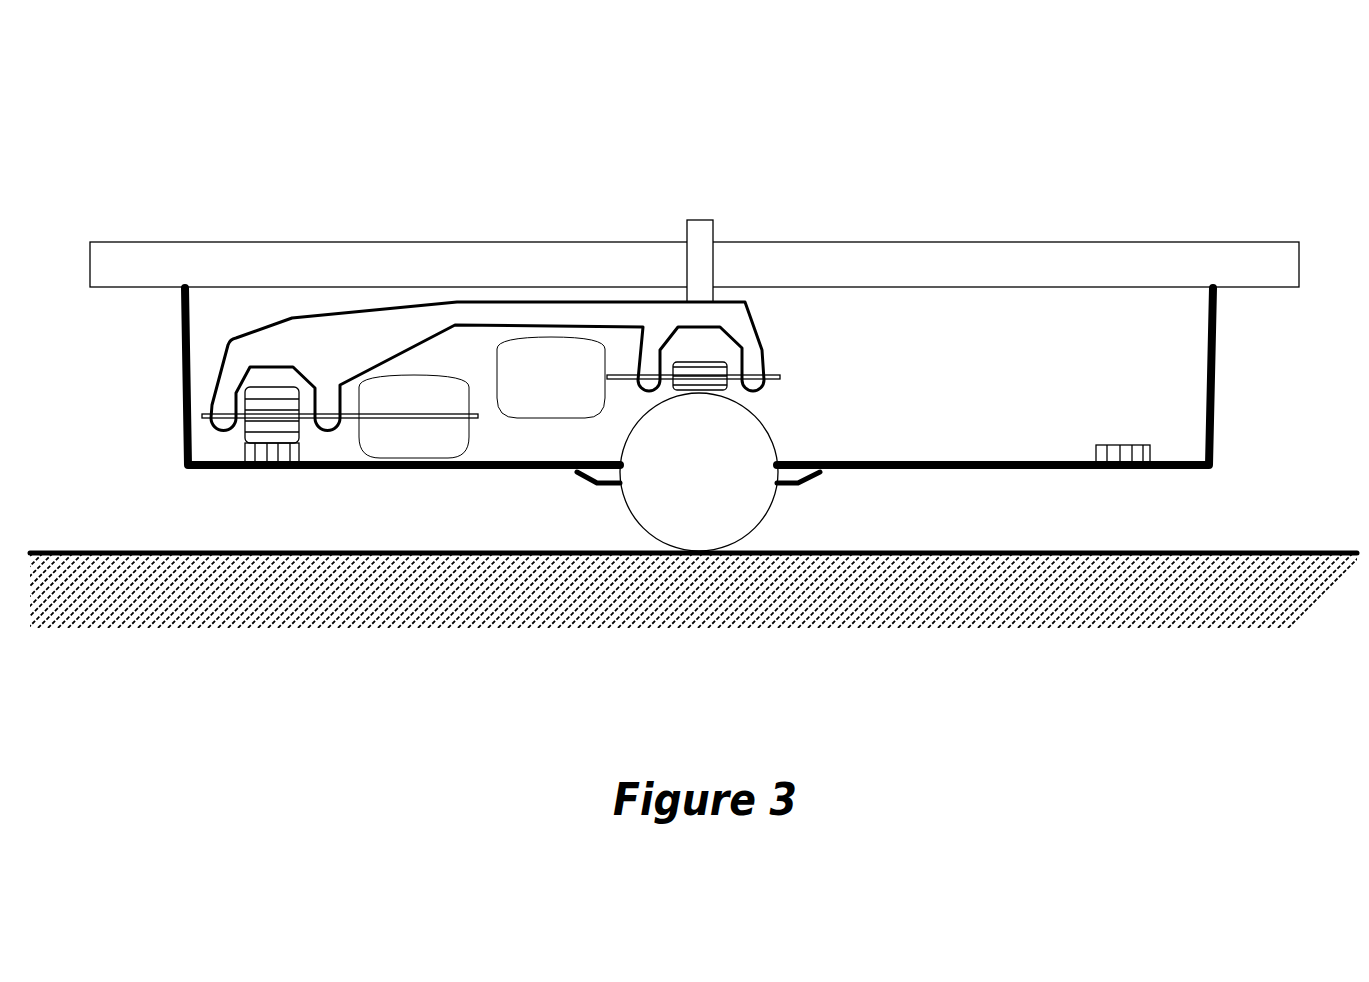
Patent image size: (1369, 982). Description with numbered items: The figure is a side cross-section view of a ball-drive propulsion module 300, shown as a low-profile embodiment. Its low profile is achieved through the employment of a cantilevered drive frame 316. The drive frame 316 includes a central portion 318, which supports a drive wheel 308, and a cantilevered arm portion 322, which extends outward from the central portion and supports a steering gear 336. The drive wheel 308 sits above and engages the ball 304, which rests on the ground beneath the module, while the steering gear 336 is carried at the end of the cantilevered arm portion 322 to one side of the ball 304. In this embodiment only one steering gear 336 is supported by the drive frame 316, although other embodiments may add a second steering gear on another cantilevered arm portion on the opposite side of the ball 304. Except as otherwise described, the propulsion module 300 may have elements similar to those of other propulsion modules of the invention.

The propulsion module 300 is at (373, 142).
The ball 304 is at (782, 432).
The drive wheel 308 is at (727, 363).
The drive frame 316 is at (747, 300).
The central portion 318 is at (662, 302).
The cantilevered arm portion 322 is at (293, 318).
The steering gear 336 is at (243, 393).